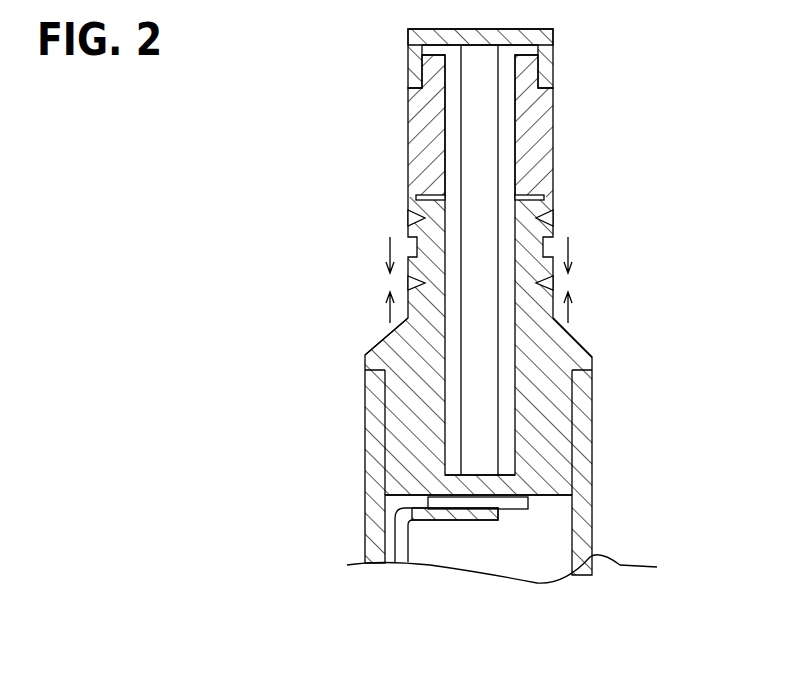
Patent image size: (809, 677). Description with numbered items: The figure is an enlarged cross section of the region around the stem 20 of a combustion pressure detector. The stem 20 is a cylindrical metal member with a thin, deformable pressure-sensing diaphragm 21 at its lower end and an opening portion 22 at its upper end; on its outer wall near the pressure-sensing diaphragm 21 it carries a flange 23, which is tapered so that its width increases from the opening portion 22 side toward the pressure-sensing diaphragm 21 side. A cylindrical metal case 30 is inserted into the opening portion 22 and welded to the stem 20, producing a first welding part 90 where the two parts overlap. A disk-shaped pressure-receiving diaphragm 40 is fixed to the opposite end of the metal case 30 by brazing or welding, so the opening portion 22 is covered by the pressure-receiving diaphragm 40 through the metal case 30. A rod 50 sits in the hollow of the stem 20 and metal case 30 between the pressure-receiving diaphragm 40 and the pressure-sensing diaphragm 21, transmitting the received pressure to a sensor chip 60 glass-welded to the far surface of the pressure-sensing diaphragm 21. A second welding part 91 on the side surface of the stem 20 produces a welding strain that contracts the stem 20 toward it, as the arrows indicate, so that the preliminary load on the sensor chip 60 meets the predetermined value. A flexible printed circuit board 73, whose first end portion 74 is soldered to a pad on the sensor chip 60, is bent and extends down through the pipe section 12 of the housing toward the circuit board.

The pipe section 12 is at (518, 568).
The stem 20 is at (397, 417).
The pressure-sensing diaphragm 21 is at (485, 483).
The opening portion 22 is at (446, 207).
The flange 23 is at (380, 342).
The metal case 30 is at (420, 115).
The pressure-receiving diaphragm 40 is at (418, 46).
The rod 50 is at (482, 136).
The sensor chip 60 is at (530, 503).
The flexible printed circuit board 73 is at (402, 542).
The first end portion 74 is at (491, 521).
The first welding part 90 is at (410, 216).
The second welding part 91 is at (410, 283).